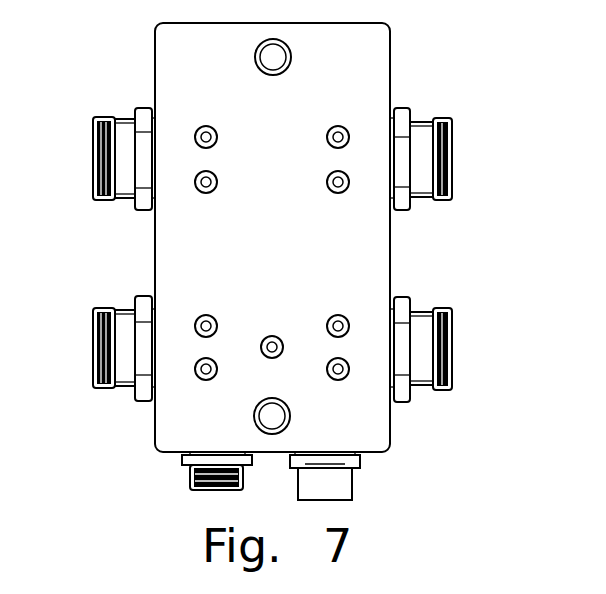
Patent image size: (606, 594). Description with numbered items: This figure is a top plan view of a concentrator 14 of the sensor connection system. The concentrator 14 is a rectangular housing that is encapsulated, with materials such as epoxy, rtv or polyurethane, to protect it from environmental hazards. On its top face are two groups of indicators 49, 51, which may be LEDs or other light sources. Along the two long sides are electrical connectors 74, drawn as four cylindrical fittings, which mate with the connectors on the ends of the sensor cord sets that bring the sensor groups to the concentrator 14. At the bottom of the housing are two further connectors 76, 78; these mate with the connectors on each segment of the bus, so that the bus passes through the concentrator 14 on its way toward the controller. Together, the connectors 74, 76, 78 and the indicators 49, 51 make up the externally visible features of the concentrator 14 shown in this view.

The concentrator 14 is at (390, 62).
The indicator 49 is at (206, 126).
The indicator 51 is at (206, 193).
The electrical connector 74 is at (108, 117).
The connector 76 is at (195, 486).
The connector 78 is at (345, 491).